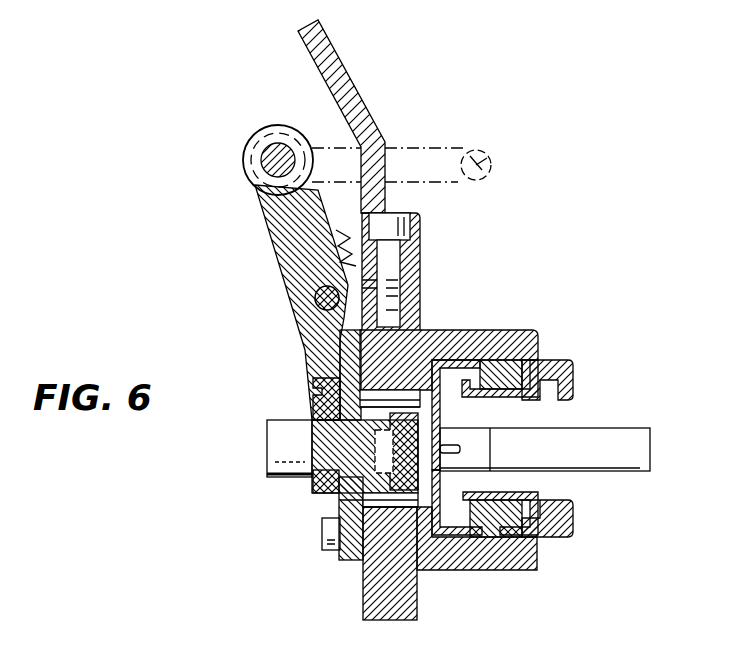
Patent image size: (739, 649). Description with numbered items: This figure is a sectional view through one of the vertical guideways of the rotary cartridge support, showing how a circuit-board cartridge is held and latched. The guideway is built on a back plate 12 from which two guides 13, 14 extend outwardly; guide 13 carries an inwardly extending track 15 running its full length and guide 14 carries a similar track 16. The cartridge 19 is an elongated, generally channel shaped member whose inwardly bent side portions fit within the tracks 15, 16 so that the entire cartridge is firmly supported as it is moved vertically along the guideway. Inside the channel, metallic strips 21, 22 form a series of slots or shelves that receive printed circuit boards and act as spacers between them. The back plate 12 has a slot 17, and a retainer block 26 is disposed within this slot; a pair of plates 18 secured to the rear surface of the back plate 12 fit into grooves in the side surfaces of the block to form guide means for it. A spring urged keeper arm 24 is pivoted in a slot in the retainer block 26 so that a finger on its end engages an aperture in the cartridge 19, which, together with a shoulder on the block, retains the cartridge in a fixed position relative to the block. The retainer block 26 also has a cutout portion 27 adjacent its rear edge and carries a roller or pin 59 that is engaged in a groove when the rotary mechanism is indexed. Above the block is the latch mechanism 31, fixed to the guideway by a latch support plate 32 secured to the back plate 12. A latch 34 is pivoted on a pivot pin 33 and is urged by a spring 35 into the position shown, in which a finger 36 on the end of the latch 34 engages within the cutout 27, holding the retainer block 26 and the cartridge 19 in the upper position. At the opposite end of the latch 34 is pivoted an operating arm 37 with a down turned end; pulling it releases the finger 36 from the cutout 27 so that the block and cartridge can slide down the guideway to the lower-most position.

The back plate 12 is at (382, 580).
The guide 13 is at (512, 345).
The guide 14 is at (490, 576).
The track 15 is at (520, 362).
The track 16 is at (540, 543).
The slot 17 is at (370, 500).
The plates 18 is at (331, 385).
The cartridge 19 is at (560, 368).
The metallic strip 21 is at (540, 399).
The metallic strip 22 is at (546, 500).
The keeper arm 24 is at (618, 442).
The retainer block 26 is at (332, 474).
The cutout portion 27 is at (314, 418).
The latch mechanism 31 is at (427, 145).
The latch support plate 32 is at (406, 266).
The pivot pin 33 is at (315, 304).
The latch 34 is at (306, 268).
The spring 35 is at (327, 219).
The finger 36 is at (336, 402).
The operating arm 37 is at (488, 156).
The pin 59 is at (286, 454).